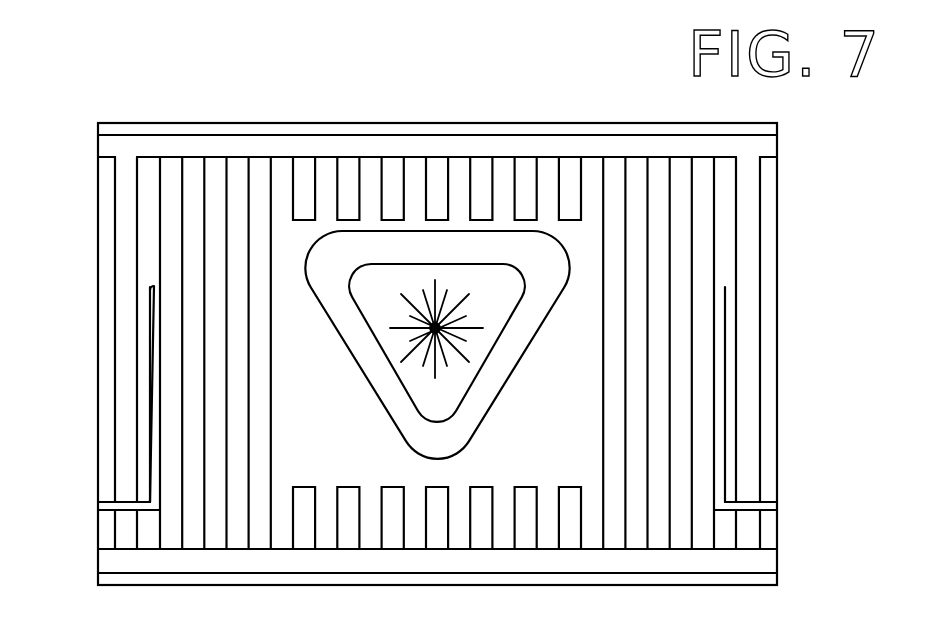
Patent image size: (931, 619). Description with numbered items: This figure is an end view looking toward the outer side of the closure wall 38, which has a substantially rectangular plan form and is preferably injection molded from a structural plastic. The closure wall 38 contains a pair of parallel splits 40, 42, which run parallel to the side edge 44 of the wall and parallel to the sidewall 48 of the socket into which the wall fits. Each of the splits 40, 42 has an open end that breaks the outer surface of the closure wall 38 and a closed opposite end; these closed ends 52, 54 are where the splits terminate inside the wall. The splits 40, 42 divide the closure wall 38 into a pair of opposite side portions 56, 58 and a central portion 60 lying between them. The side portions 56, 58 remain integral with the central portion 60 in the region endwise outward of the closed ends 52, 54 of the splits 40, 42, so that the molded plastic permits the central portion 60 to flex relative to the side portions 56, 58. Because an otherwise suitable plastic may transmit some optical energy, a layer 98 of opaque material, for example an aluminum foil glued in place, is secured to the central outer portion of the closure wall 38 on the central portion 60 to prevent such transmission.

The closure wall 38 is at (577, 118).
The split 40 is at (153, 465).
The split 42 is at (718, 388).
The side edge 44 is at (100, 313).
The sidewall 48 is at (778, 303).
The closed end 52 is at (155, 283).
The closed end 54 is at (717, 283).
The side portion 56 is at (105, 388).
The side portion 58 is at (753, 453).
The central portion 60 is at (462, 168).
The layer 98 is at (393, 347).